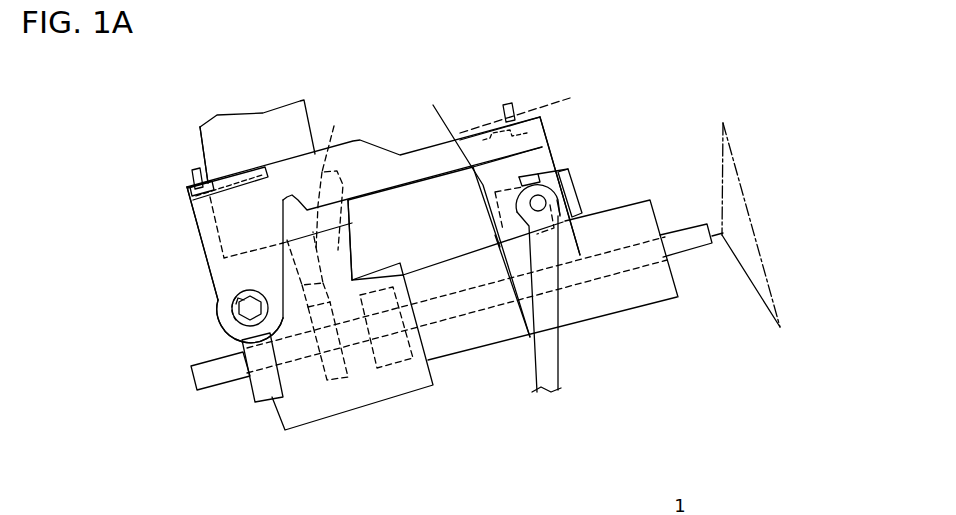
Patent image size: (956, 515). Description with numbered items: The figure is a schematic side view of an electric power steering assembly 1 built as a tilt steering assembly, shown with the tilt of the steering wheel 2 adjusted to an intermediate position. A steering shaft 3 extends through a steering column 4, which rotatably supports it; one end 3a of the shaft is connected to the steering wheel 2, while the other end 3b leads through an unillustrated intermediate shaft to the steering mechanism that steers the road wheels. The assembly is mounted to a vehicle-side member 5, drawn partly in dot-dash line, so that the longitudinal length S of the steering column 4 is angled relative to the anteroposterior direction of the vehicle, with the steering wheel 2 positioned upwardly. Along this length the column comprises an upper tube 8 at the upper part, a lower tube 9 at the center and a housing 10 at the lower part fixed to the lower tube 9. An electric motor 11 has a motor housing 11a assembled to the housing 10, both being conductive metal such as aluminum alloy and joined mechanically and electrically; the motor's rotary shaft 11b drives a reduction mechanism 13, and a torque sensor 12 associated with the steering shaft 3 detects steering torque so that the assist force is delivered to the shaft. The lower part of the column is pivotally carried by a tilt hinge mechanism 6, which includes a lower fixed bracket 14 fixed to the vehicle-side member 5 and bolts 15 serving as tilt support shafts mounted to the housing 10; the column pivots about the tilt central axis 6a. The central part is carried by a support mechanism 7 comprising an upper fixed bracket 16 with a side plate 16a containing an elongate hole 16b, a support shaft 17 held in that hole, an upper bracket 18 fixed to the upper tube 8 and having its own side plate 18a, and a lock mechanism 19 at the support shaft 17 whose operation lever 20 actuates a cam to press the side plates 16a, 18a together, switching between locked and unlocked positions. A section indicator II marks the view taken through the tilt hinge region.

The electric power steering assembly 1 is at (711, 92).
The steering wheel 2 is at (767, 277).
The steering shaft 3 is at (623, 273).
The one end of the steering shaft 3a is at (699, 258).
The other end of the steering shaft 3b is at (192, 380).
The steering column 4 is at (534, 444).
The vehicle-side member 5 is at (187, 186).
The tilt hinge mechanism 6 is at (114, 207).
The tilt central axis 6a is at (250, 311).
The support mechanism 7 is at (588, 176).
The upper tube 8 is at (530, 340).
The lower tube 9 is at (488, 362).
The housing 10 is at (393, 403).
The electric motor 11 is at (304, 108).
The motor housing 11a is at (207, 154).
The rotary shaft 11b is at (346, 177).
The torque sensor 12 is at (393, 368).
The reduction mechanism 13 is at (328, 382).
The lower fixed bracket 14 is at (182, 228).
The bolts 15 is at (240, 297).
The upper fixed bracket 16 is at (556, 140).
The side plate 16a is at (460, 209).
The elongate hole 16b is at (496, 191).
The support shaft 17 is at (517, 211).
The upper bracket 18 is at (488, 236).
The side plate 18a is at (573, 164).
The lock mechanism 19 is at (571, 204).
The operation lever 20 is at (558, 377).
The longitudinal length S is at (640, 97).
The section line II is at (189, 333).